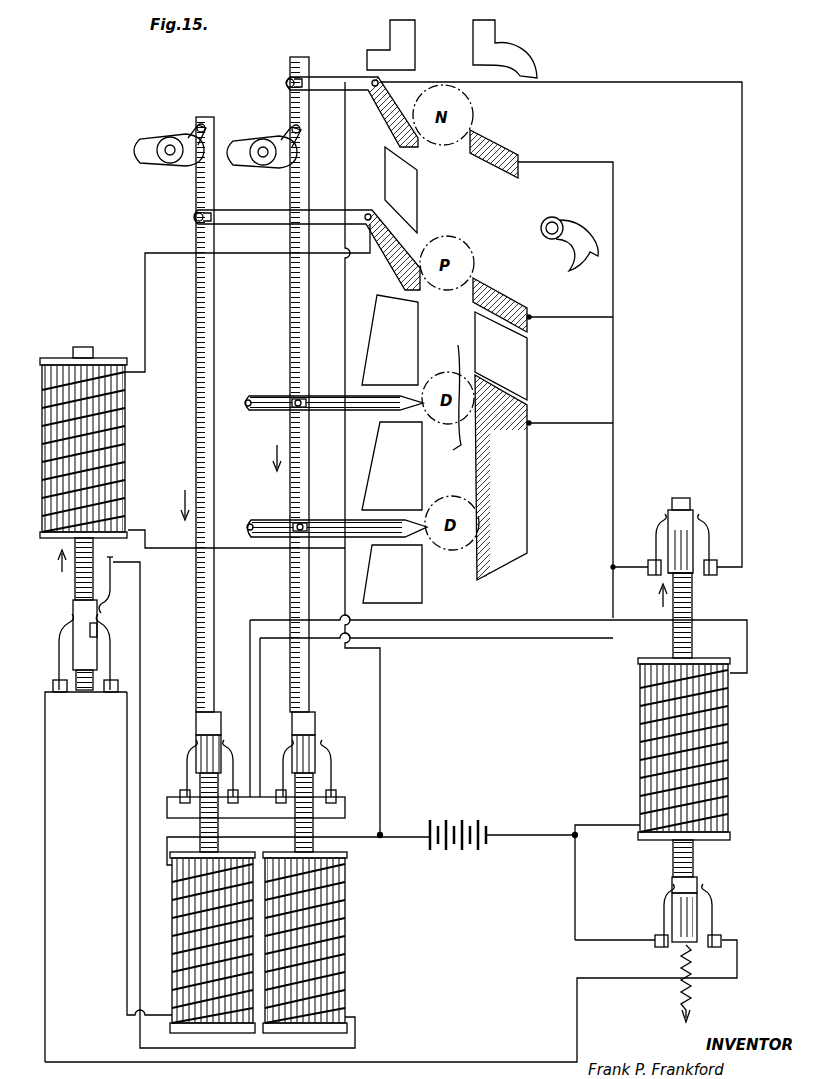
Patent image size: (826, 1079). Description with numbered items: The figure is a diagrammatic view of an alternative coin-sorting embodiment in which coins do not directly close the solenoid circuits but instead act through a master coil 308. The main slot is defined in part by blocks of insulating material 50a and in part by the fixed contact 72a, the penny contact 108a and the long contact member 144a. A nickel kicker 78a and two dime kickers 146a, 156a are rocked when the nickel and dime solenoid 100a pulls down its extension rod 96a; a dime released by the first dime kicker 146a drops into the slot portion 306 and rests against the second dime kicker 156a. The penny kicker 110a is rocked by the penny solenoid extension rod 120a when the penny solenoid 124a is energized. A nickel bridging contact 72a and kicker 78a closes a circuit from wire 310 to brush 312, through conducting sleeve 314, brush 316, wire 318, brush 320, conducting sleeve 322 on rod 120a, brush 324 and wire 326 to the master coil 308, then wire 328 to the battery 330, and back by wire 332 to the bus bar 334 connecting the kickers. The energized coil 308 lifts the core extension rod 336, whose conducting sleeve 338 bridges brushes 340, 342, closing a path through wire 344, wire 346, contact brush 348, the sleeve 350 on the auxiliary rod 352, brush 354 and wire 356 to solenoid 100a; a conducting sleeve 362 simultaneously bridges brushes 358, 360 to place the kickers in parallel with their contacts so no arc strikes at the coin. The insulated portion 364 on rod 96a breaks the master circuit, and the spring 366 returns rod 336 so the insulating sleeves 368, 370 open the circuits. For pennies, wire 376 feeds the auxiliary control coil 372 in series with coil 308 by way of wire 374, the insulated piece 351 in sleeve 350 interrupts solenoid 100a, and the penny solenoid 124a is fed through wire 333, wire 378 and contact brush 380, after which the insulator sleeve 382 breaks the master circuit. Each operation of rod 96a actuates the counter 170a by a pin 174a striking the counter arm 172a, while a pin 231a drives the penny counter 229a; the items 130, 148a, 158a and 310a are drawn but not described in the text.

The blocks of insulating material 50a is at (400, 34).
The fixed contact 72a is at (505, 152).
The nickel kicker 78a is at (398, 124).
The solenoid extension rod 96a is at (292, 298).
The nickel and dime solenoid 100a is at (335, 936).
The penny contact 108a is at (508, 305).
The penny kicker 110a is at (405, 248).
The penny solenoid extension rod 120a is at (215, 592).
The penny solenoid 124a is at (175, 932).
The roller cam 130 is at (568, 230).
The contact member 144a is at (512, 500).
The first dime kicker 146a is at (392, 412).
The pivot 148a is at (250, 398).
The second dime kicker 156a is at (392, 540).
The pivot 158a is at (252, 522).
The counter 170a is at (256, 166).
The counter arm 172a is at (285, 136).
The pin 174a is at (294, 125).
The counter 229a is at (160, 164).
The pin 231a is at (198, 124).
The slot portion 306 is at (445, 386).
The master coil 308 is at (712, 762).
The wire 310 is at (614, 250).
The conductor 310a is at (630, 566).
The brush 312 is at (282, 756).
The conducting sleeve 314 is at (315, 745).
The brush 316 is at (325, 766).
The wire 318 is at (167, 818).
The brush 320 is at (186, 763).
The conducting sleeve 322 is at (196, 742).
The brush 324 is at (234, 752).
The wire 326 is at (556, 618).
The wire 328 is at (532, 834).
The battery 330 is at (458, 820).
The wire 332 is at (408, 838).
The wire 333 is at (298, 841).
The bus bar 334 is at (344, 292).
The solenoid core extension rod 336 is at (673, 632).
The conducting sleeve 338 is at (698, 922).
The brush 340 is at (715, 906).
The contact brush 342 is at (660, 896).
The wire 344 is at (612, 940).
The wire 346 is at (46, 826).
The contact brush 348 is at (58, 644).
The sleeve 350 is at (73, 610).
The insulated piece 351 is at (98, 630).
The solenoid extension rod 352 is at (84, 692).
The brush 354 is at (113, 594).
The wire 356 is at (128, 684).
The brush 358 is at (704, 518).
The brush 360 is at (660, 518).
The conducting sleeve 362 is at (690, 574).
The insulated portion 364 is at (314, 718).
The spring 366 is at (692, 1000).
The insulating sleeve 368 is at (690, 878).
The insulated sleeve 370 is at (681, 496).
The auxiliary control coil 372 is at (110, 458).
The wire 374 is at (165, 540).
The wire 376 is at (168, 252).
The wire 378 is at (126, 884).
The contact brush 380 is at (114, 648).
The insulator sleeve 382 is at (214, 722).